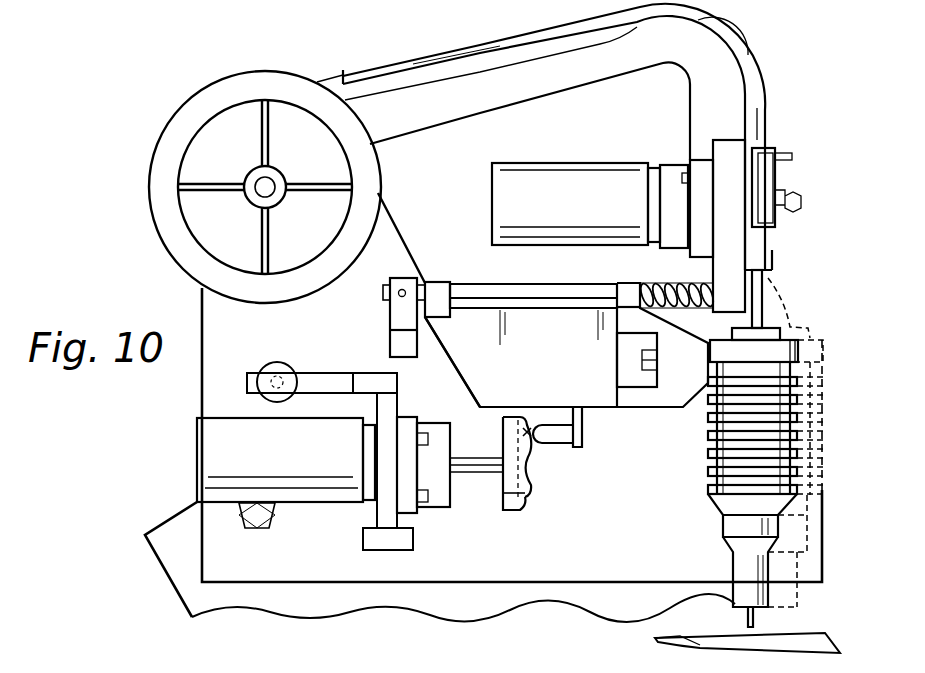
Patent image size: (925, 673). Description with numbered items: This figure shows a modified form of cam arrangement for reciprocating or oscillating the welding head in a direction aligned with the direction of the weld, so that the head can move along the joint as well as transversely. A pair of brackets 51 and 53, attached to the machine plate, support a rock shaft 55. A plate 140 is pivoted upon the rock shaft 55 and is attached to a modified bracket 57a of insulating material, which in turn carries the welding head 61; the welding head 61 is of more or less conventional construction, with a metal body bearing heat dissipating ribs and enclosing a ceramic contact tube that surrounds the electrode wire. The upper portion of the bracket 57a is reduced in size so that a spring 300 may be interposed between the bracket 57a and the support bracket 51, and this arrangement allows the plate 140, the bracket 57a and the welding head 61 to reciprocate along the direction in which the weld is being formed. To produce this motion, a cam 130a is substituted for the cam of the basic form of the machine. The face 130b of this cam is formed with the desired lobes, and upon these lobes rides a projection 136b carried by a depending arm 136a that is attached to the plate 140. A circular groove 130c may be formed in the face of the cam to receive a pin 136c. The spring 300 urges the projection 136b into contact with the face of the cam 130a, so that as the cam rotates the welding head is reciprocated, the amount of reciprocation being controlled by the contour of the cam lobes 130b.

The bracket 51 is at (740, 262).
The bracket 53 is at (402, 278).
The rock shaft 55 is at (495, 283).
The modified bracket 57a is at (678, 395).
The welding head 61 is at (827, 352).
The cam 130a is at (513, 513).
The cam face 130b is at (530, 495).
The circular groove 130c is at (519, 417).
The depending arm 136a is at (590, 407).
The projection 136b is at (560, 434).
The pin 136c is at (533, 457).
The plate 140 is at (582, 347).
The spring 300 is at (687, 282).